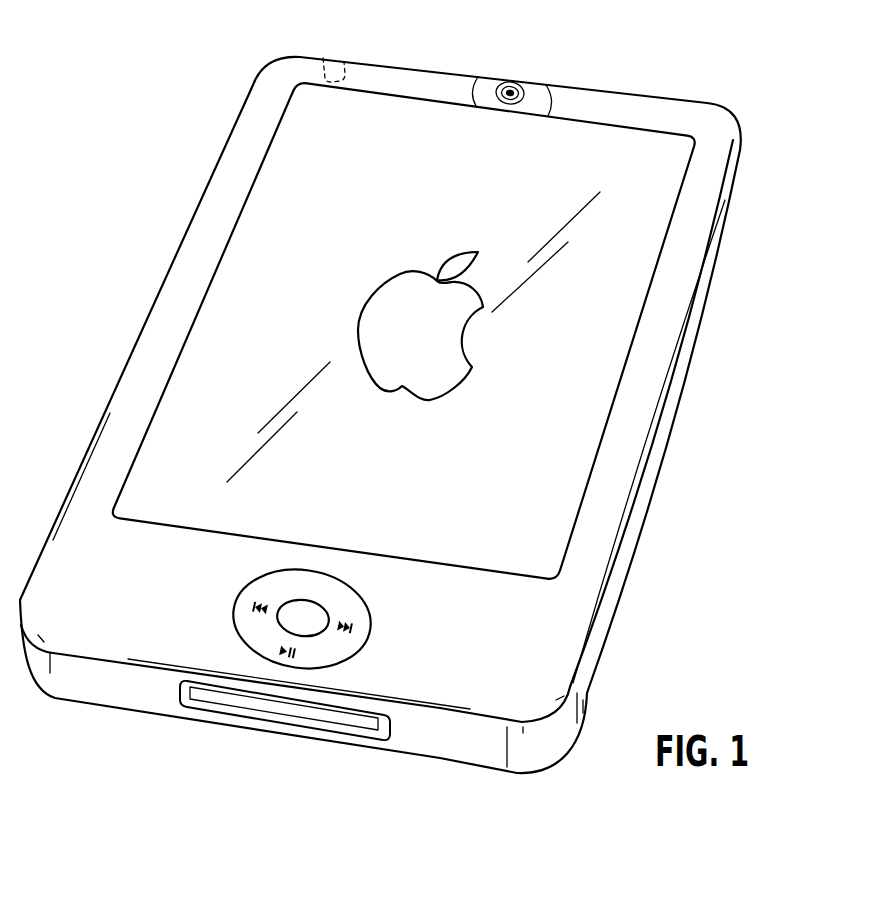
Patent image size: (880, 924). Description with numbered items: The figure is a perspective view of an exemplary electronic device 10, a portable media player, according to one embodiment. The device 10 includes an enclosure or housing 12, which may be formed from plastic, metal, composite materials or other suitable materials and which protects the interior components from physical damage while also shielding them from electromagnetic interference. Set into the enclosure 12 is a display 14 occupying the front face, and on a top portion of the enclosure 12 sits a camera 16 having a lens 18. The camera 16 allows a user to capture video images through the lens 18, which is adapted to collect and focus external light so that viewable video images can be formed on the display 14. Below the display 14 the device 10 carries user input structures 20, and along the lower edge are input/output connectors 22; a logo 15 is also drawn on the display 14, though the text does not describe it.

The electronic device 10 is at (158, 83).
The enclosure 12 is at (742, 173).
The display 14 is at (592, 128).
The logo 15 is at (367, 297).
The camera 16 is at (480, 78).
The lens 18 is at (513, 82).
The user input structures 20 is at (233, 620).
The input/output connectors 22 is at (283, 712).